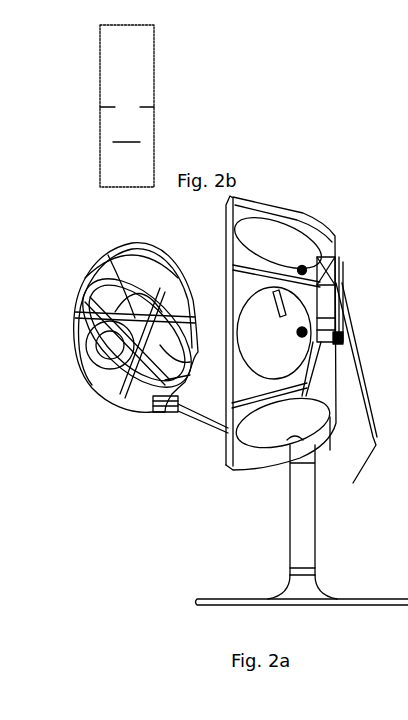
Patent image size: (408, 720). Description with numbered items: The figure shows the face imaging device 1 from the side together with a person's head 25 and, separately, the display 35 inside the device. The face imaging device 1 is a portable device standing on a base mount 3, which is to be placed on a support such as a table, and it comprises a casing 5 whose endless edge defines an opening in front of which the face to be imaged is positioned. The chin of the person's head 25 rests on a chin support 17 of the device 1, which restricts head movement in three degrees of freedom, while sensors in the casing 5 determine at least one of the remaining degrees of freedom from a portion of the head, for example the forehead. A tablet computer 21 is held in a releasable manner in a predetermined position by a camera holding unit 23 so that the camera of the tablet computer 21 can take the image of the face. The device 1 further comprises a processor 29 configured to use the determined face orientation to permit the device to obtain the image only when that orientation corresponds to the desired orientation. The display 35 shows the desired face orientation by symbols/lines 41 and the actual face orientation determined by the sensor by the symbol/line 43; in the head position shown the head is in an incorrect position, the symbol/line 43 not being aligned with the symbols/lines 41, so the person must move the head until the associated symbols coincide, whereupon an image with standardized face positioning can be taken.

In FIG. 2A, the face imaging device 1 is at (354, 206).
In FIG. 2A, the base mount 3 is at (293, 560).
In FIG. 2A, the casing 5 is at (240, 247).
In FIG. 2A, the chin support 17 is at (167, 413).
In FIG. 2A, the tablet computer 21 is at (356, 398).
In FIG. 2A, the camera holding unit 23 is at (341, 320).
In FIG. 2A, the person's head 25 is at (105, 383).
In FIG. 2A, the processor 29 is at (316, 510).
In FIG. 2B, the display 35 is at (155, 88).
In FIG. 2B, the symbols/lines 41 is at (113, 108).
In FIG. 2B, the symbol/line 43 is at (131, 142).